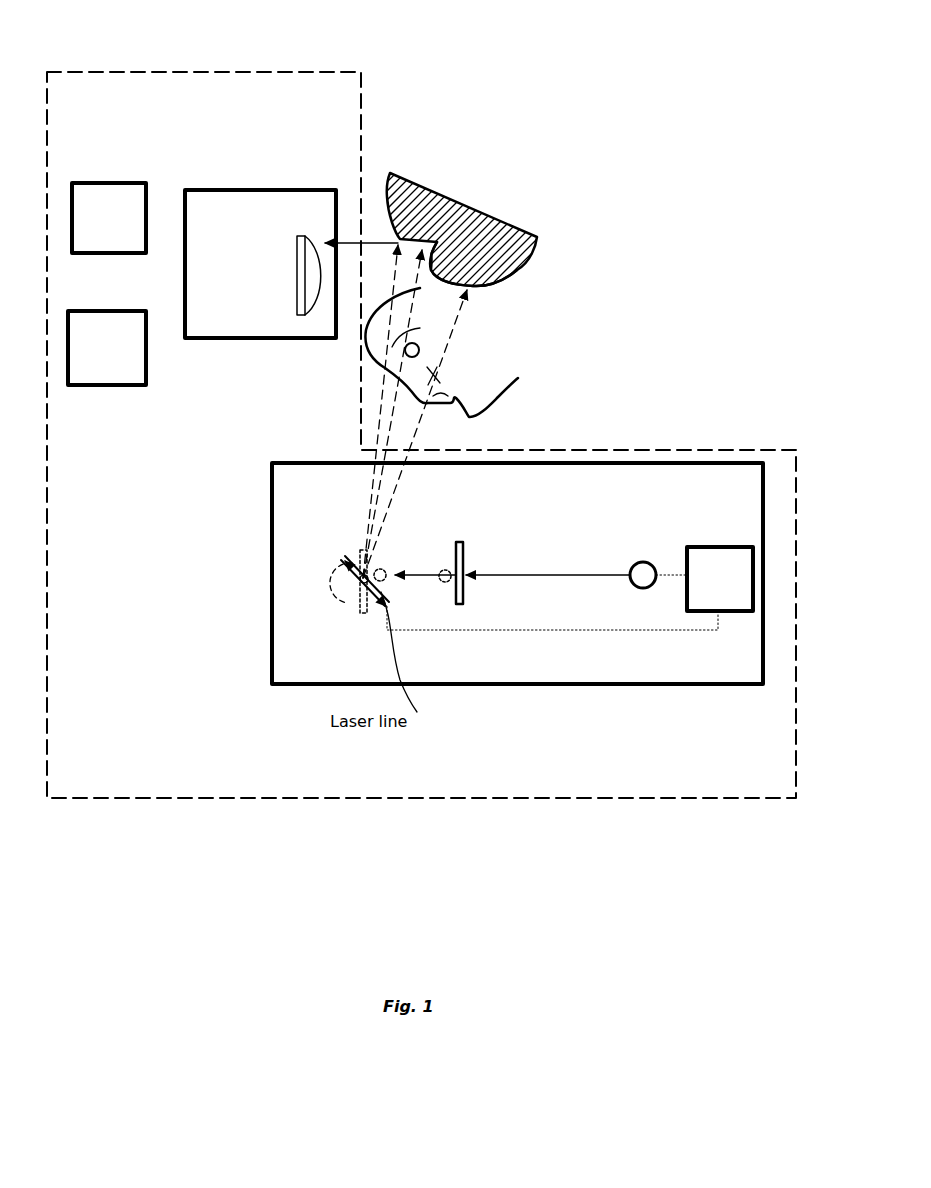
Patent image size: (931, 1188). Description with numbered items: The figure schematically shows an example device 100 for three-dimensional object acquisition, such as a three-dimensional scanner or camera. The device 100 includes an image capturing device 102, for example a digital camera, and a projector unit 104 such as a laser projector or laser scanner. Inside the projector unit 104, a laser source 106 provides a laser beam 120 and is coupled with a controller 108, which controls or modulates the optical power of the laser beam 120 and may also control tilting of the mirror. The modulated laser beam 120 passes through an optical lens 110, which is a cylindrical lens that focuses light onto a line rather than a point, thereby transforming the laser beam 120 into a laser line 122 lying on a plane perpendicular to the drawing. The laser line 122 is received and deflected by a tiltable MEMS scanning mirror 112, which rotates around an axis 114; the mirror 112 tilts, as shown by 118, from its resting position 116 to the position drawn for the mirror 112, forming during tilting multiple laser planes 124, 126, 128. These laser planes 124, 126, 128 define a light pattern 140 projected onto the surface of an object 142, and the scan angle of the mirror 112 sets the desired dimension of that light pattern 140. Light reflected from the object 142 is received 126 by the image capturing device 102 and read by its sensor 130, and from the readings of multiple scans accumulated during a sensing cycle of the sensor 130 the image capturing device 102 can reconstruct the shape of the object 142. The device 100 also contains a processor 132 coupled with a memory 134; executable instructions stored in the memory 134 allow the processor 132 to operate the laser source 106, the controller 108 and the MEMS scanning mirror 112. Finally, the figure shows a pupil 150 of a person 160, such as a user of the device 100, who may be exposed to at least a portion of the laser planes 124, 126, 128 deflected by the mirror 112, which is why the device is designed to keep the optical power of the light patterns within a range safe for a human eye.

The device 100 is at (264, 60).
The image capturing device 102 is at (208, 187).
The projector unit 104 is at (668, 463).
The laser source 106 is at (652, 588).
The controller 108 is at (753, 585).
The optical lens 110 is at (458, 605).
The MEMS scanning mirror 112 is at (353, 555).
The axis 114 is at (360, 587).
The resting position 116 is at (363, 613).
The tilting 118 is at (350, 607).
The laser beam 120 is at (533, 580).
The laser line 122 is at (447, 582).
The laser plane 124 is at (393, 393).
The laser plane 126 is at (413, 407).
The laser plane 128 is at (413, 428).
The sensor 130 is at (298, 315).
The processor 132 is at (118, 183).
The memory 134 is at (142, 393).
The light pattern 140 is at (492, 258).
The object 142 is at (537, 238).
The pupil 150 is at (423, 345).
The person 160 is at (470, 387).